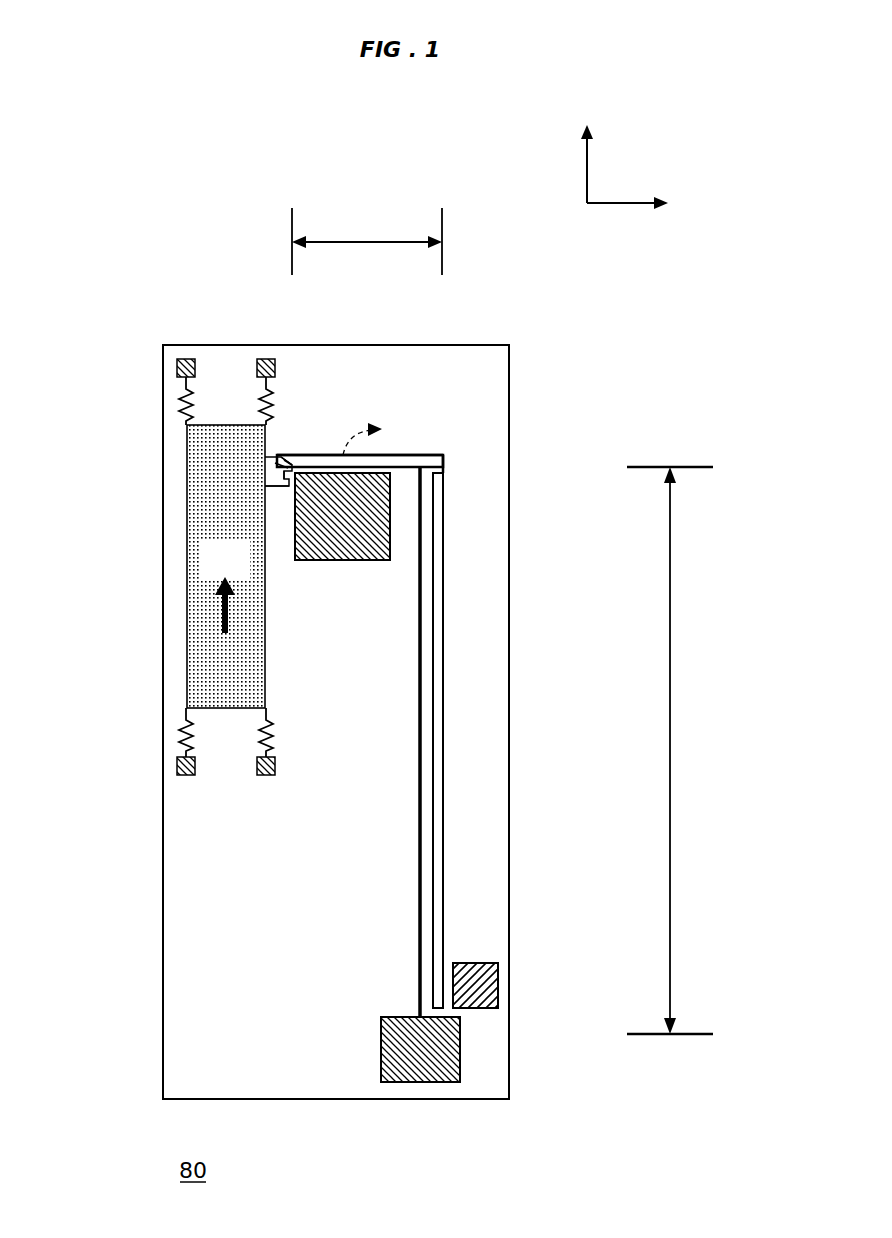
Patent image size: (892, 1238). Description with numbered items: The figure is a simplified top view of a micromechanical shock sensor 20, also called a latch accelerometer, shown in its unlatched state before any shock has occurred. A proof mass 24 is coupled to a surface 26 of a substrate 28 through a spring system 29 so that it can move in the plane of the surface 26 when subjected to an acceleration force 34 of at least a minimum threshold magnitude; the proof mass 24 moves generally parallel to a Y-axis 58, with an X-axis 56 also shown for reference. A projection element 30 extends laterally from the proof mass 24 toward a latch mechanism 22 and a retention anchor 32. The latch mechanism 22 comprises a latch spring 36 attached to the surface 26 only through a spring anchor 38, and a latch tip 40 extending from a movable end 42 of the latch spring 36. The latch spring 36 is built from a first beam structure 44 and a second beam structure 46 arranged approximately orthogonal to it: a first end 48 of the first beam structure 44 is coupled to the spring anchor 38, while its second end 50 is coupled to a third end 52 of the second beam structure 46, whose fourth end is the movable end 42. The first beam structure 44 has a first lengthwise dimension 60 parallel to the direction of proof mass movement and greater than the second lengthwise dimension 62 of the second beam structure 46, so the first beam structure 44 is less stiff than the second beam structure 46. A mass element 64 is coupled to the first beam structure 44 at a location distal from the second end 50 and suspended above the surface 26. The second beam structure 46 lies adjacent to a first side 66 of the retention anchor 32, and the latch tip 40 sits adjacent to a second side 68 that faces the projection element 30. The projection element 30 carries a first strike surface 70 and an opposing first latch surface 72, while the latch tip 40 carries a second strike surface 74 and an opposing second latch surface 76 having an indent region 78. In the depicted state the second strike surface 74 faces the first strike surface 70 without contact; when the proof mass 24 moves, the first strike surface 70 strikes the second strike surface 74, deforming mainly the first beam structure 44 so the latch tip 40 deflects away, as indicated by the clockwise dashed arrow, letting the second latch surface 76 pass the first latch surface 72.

The micromechanical shock sensor 20 is at (191, 298).
The latch mechanism 22 is at (606, 381).
The proof mass 24 is at (191, 652).
The surface 26 is at (470, 383).
The substrate 28 is at (506, 343).
The spring system 29 is at (262, 360).
The projection element 30 is at (283, 483).
The retention anchor 32 is at (343, 473).
The acceleration force 34 is at (222, 604).
The latch spring 36 is at (447, 638).
The spring anchor 38 is at (395, 1080).
The latch tip 40 is at (308, 456).
The movable end 42 is at (316, 456).
The first beam structure 44 is at (447, 725).
The second beam structure 46 is at (380, 456).
The first end 48 is at (418, 1002).
The second end 50 is at (446, 471).
The third end 52 is at (438, 454).
The X-axis 56 is at (615, 202).
The Y-axis 58 is at (588, 152).
The first lengthwise dimension 60 is at (670, 776).
The second lengthwise dimension 62 is at (333, 242).
The mass element 64 is at (498, 982).
The first side 66 is at (358, 560).
The second side 68 is at (302, 508).
The first strike surface 70 is at (276, 462).
The first latch surface 72 is at (272, 490).
The second strike surface 74 is at (279, 490).
The second latch surface 76 is at (286, 455).
The indent region 78 is at (292, 436).